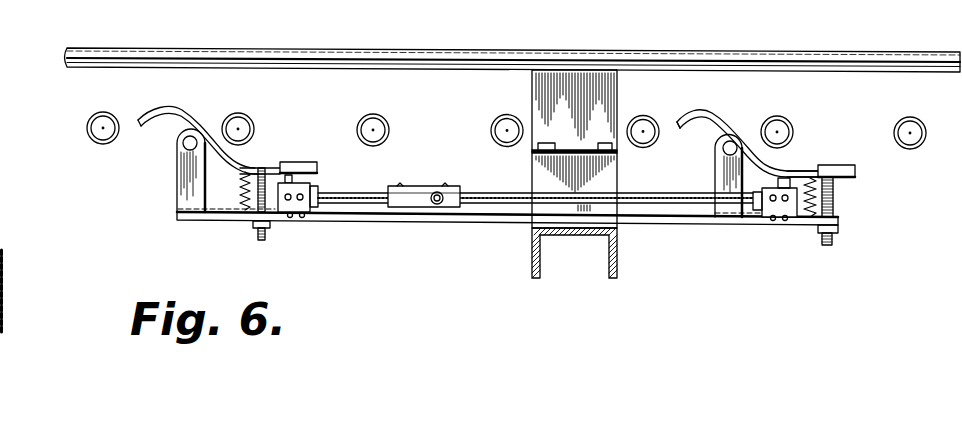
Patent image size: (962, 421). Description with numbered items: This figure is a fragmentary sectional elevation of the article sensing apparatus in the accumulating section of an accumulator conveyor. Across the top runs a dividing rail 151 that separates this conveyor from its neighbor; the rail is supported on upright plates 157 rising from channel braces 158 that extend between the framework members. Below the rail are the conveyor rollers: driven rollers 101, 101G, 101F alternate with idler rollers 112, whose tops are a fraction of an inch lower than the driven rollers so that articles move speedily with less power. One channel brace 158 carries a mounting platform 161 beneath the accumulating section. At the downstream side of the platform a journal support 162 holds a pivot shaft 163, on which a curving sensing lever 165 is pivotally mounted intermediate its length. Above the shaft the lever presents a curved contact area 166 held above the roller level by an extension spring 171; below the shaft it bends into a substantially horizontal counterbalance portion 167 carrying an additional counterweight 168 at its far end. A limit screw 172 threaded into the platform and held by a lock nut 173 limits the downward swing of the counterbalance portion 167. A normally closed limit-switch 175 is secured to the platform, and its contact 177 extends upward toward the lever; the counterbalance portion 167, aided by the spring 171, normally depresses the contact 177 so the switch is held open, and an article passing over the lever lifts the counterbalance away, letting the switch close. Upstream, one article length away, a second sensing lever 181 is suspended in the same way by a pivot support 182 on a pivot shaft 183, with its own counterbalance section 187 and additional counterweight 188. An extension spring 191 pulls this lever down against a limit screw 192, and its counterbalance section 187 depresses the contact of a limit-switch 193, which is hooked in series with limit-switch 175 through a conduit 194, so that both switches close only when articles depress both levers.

The dividing rail 151 is at (511, 50).
The upright plate 157 is at (578, 75).
The channel brace 158 is at (540, 255).
The mounting platform 161 is at (666, 226).
The idler roller 112 is at (103, 112).
The driven roller 101 is at (239, 113).
The driven roller 101G is at (507, 115).
The driven roller 101F is at (781, 117).
The second sensing lever 181 is at (165, 112).
The pivot support 182 is at (181, 190).
The pivot shaft 183 is at (186, 150).
The counterbalance section 187 is at (265, 165).
The additional counterweight 188 is at (300, 161).
The extension spring 191 is at (241, 190).
The limit screw 192 is at (255, 208).
The limit-switch 193 is at (313, 180).
The conduit 194 is at (462, 208).
The journal support 162 is at (716, 177).
The pivot shaft 163 is at (723, 150).
The sensing lever 165 is at (704, 112).
The contact area 166 is at (680, 122).
The counterbalance portion 167 is at (797, 168).
The additional counterweight 168 is at (856, 171).
The extension spring 171 is at (805, 205).
The limit screw 172 is at (834, 197).
The lock nut 173 is at (838, 229).
The limit-switch 175 is at (778, 217).
The contact 177 is at (783, 176).